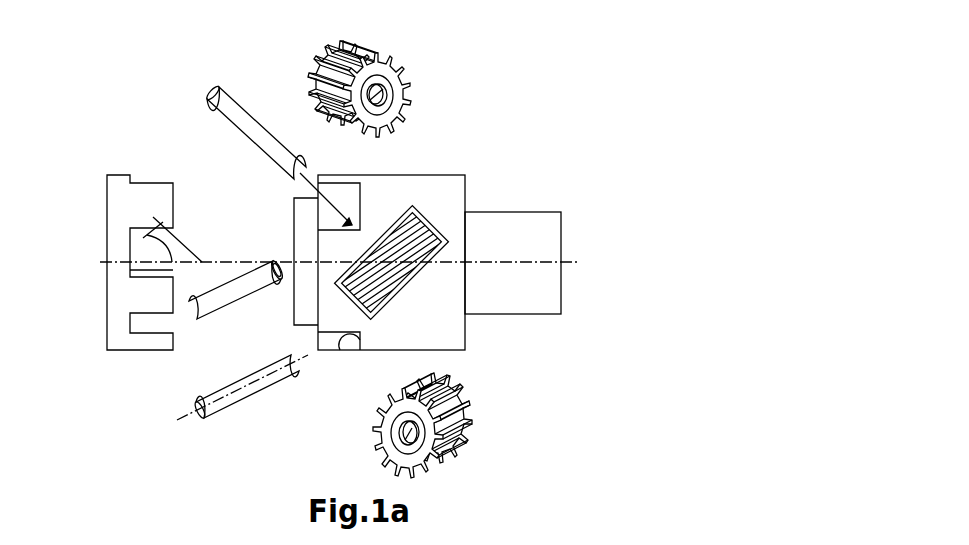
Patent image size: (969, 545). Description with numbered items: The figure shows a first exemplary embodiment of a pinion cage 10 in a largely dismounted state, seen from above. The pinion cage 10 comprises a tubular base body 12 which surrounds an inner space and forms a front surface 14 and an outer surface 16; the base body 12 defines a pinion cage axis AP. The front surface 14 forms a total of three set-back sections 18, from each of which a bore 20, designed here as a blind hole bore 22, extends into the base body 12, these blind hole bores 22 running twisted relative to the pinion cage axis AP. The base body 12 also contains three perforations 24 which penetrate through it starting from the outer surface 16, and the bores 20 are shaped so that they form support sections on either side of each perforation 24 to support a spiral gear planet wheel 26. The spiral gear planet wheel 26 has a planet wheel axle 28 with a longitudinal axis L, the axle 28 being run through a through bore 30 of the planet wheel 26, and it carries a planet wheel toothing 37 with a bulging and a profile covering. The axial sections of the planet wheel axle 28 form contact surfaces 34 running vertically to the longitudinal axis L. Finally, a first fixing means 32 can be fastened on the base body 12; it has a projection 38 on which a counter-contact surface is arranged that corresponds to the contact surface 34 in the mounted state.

The pinion cage 10 is at (615, 111).
The tubular base body 12 is at (498, 223).
The front surface 14 is at (313, 346).
The outer surface 16 is at (447, 173).
The section 18 is at (350, 226).
The bore 20 is at (239, 291).
The blind hole bore 22 is at (355, 208).
The perforation 24 is at (440, 222).
The spiral gear planet wheel 26 is at (481, 239).
The planet wheel axle 28 is at (240, 103).
The through bore 30 is at (387, 82).
The first fixing means 32 is at (113, 303).
The contact surface 34 is at (462, 82).
The planet wheel toothing 37 is at (418, 265).
The projection 38 is at (157, 207).
The pinion cage axis AP is at (562, 262).
The longitudinal axis L is at (239, 423).